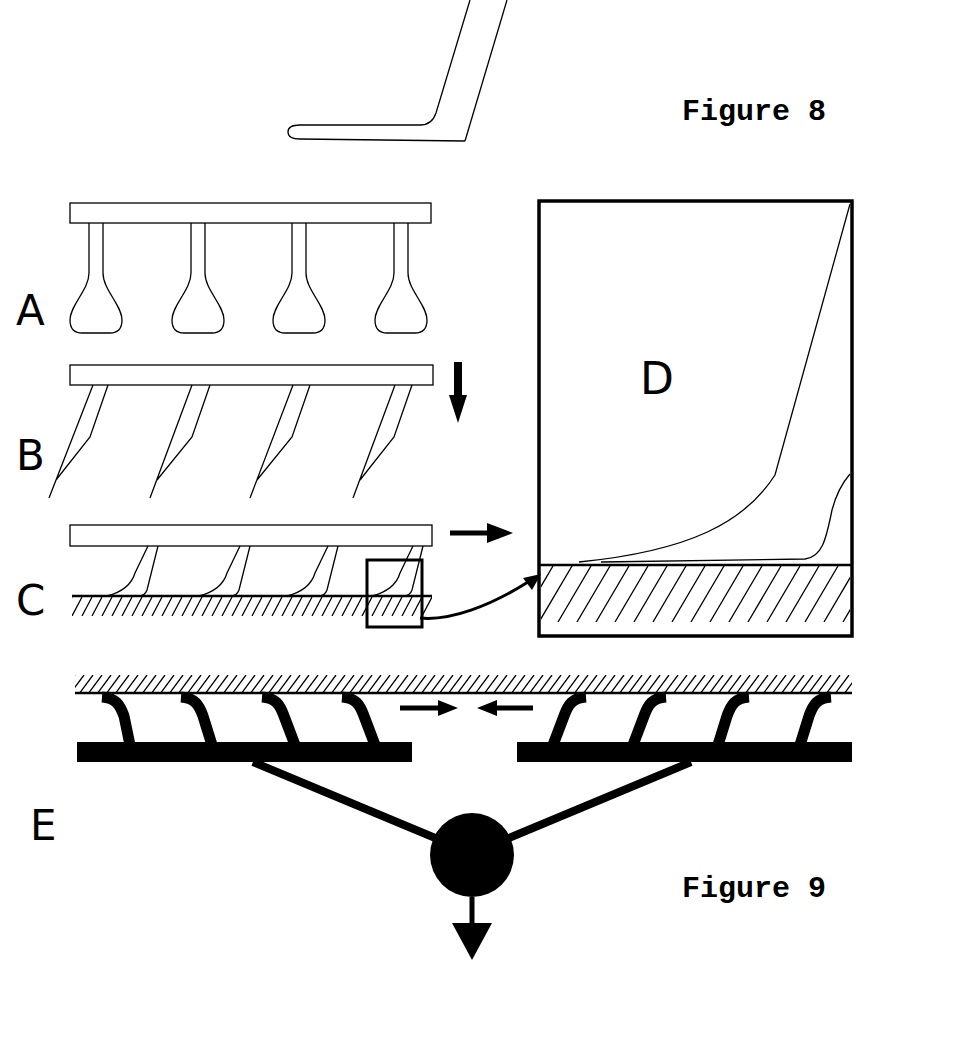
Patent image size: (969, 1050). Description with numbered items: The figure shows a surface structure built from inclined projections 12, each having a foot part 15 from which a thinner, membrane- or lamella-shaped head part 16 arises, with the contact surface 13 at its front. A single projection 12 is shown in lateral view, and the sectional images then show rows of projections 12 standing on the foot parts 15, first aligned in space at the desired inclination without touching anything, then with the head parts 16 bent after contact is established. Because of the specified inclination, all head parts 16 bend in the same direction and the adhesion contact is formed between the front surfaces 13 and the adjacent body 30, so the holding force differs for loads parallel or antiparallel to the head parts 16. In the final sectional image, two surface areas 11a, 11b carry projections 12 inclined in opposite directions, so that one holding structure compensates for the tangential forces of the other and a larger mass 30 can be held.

In FIG. 8, the projection 12 is at (278, 298).
In FIG. 8, the contact surface 13 is at (372, 138).
In FIG. 8, the foot part 15 is at (400, 248).
In FIG. 8, the head part 16 is at (363, 123).
In FIG. 8, the adjacent body 30 is at (268, 636).
In FIG. 9, the first surface area 11a is at (222, 729).
In FIG. 9, the second surface area 11b is at (695, 729).